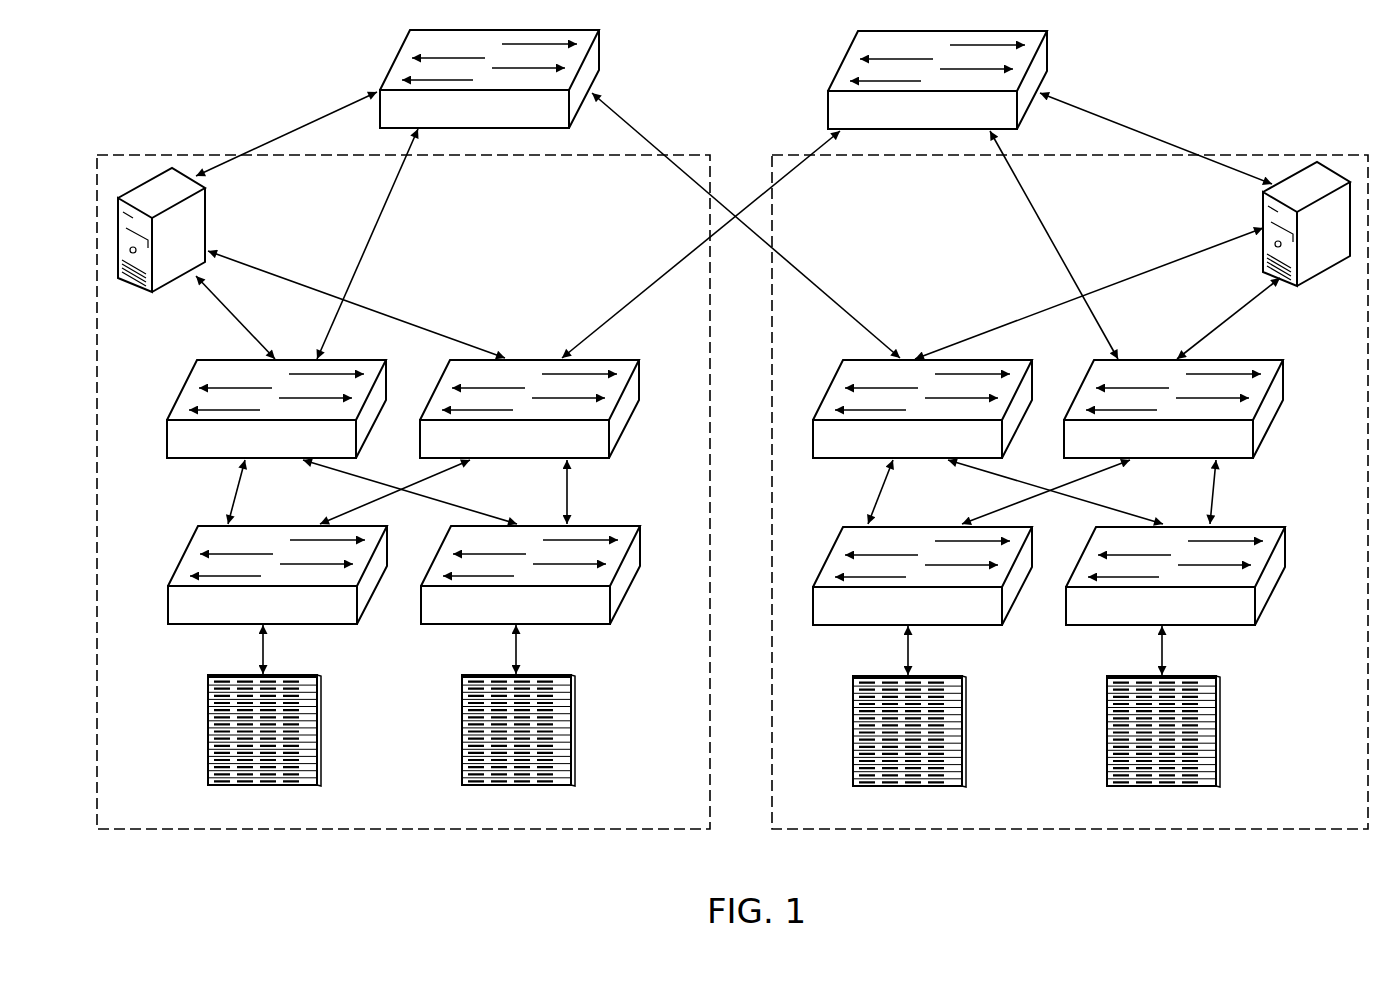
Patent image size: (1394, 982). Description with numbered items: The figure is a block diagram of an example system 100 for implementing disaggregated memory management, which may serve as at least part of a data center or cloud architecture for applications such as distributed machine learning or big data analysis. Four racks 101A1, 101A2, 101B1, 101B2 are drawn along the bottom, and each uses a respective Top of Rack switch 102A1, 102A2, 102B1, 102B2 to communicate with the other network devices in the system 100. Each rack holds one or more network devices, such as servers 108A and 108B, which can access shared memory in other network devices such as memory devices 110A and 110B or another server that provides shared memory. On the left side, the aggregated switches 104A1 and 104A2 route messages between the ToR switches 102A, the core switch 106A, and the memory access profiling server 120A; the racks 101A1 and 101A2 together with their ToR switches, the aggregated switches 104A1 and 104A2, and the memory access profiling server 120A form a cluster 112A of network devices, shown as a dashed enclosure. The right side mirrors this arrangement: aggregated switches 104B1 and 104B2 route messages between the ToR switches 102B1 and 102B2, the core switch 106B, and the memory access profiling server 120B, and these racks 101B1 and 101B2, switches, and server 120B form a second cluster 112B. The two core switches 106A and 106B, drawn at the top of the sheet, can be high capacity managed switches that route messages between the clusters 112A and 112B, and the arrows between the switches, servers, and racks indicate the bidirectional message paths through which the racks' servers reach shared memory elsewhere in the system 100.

The system 100 is at (763, 26).
The core switch 106A is at (404, 42).
The core switch 106B is at (1047, 57).
The aggregated switch 104A1 is at (167, 430).
The aggregated switch 104A2 is at (611, 362).
The aggregated switch 104B1 is at (977, 360).
The aggregated switch 104B2 is at (1280, 361).
The Top of Rack (ToR) switch 102A1 is at (168, 598).
The Top of Rack (ToR) switch 102A2 is at (607, 527).
The Top of Rack (ToR) switch 102B1 is at (900, 526).
The Top of Rack (ToR) switch 102B2 is at (1282, 528).
The ToR switches 102A is at (608, 730).
The rack 101A1 is at (262, 718).
The rack 101A2 is at (561, 718).
The rack 101B1 is at (948, 720).
The rack 101B2 is at (1201, 720).
The server 108A is at (224, 732).
The server 108B is at (946, 733).
The memory device 110A is at (561, 732).
The memory device 110B is at (1199, 733).
The cluster 112A is at (157, 155).
The cluster 112B is at (1305, 155).
The memory access profiling server 120A is at (137, 292).
The memory access profiling server 120B is at (1318, 283).